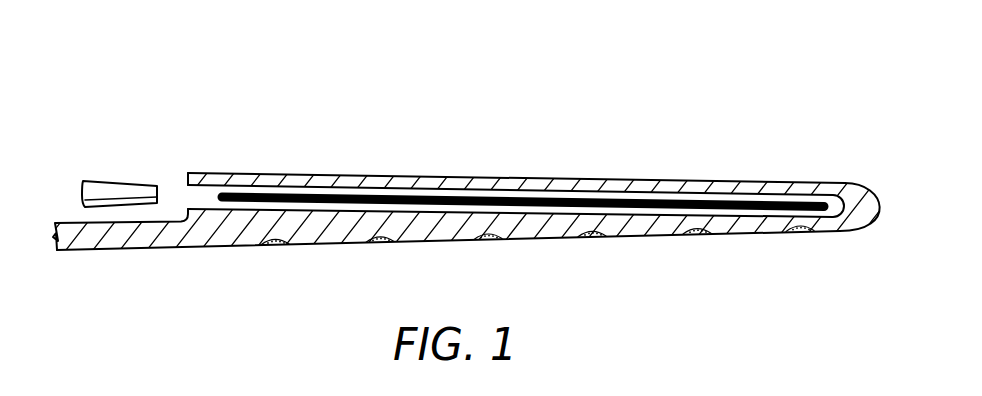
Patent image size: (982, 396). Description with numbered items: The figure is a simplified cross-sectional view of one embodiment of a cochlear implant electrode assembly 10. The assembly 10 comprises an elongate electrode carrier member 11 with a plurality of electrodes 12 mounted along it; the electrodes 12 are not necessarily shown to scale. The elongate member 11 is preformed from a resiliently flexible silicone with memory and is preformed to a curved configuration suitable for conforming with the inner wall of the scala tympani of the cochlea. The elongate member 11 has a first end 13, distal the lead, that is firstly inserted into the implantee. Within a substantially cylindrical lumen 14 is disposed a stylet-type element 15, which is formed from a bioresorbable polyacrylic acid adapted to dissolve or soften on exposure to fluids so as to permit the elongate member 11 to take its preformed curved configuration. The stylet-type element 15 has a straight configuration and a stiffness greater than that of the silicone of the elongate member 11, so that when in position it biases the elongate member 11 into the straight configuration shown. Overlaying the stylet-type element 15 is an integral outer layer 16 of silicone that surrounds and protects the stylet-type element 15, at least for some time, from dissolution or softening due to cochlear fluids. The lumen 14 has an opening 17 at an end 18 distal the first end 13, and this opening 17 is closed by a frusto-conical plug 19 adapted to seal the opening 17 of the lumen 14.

The cochlear implant electrode assembly 10 is at (491, 159).
The elongate electrode carrier member 11 is at (333, 229).
The electrodes 12 is at (490, 241).
The first end 13 is at (864, 184).
The lumen 14 is at (657, 224).
The stylet-type element 15 is at (603, 201).
The outer layer 16 is at (285, 177).
The opening 17 is at (197, 196).
The end 18 is at (188, 173).
The plug 19 is at (93, 186).